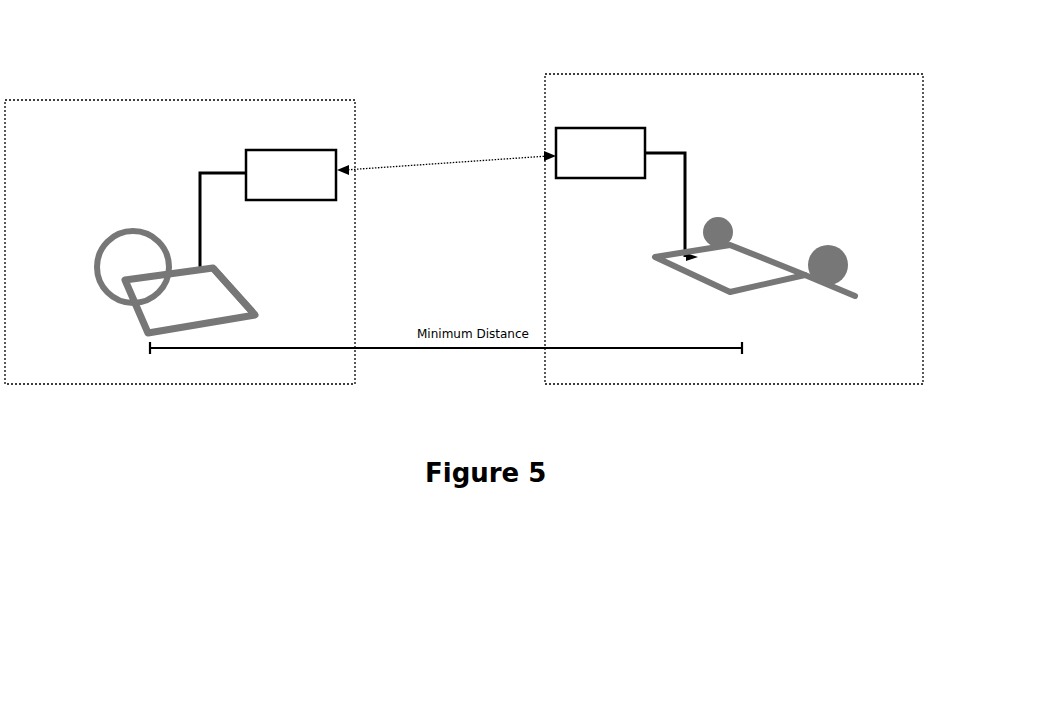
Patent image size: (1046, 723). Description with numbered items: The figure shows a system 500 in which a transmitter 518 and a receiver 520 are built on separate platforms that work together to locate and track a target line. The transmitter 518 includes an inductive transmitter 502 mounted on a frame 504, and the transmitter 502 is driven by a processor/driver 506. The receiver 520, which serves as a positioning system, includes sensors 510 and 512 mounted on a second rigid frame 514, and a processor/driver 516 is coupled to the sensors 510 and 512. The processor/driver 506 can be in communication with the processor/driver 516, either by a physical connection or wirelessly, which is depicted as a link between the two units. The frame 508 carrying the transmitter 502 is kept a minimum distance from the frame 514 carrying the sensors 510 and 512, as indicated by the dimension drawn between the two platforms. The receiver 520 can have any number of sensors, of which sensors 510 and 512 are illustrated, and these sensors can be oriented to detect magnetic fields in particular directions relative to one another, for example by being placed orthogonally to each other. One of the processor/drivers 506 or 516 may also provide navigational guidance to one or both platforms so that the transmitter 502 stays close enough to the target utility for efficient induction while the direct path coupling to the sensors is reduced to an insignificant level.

The system 500 is at (113, 74).
The transmitter 502 is at (94, 270).
The frame 504 is at (143, 322).
The processor/driver 506 is at (303, 154).
The frame 508 is at (248, 305).
The sensor 510 is at (726, 221).
The sensor 512 is at (851, 265).
The second rigid frame 514 is at (765, 287).
The processor/driver 516 is at (595, 127).
The transmitter 518 is at (180, 242).
The receiver 520 is at (734, 229).